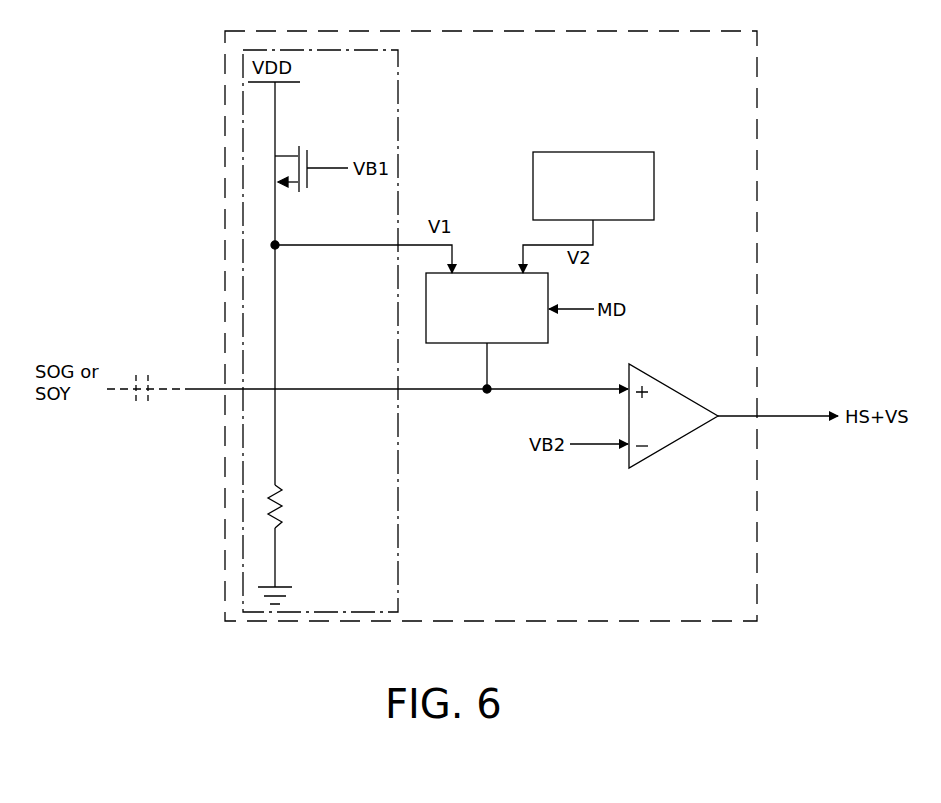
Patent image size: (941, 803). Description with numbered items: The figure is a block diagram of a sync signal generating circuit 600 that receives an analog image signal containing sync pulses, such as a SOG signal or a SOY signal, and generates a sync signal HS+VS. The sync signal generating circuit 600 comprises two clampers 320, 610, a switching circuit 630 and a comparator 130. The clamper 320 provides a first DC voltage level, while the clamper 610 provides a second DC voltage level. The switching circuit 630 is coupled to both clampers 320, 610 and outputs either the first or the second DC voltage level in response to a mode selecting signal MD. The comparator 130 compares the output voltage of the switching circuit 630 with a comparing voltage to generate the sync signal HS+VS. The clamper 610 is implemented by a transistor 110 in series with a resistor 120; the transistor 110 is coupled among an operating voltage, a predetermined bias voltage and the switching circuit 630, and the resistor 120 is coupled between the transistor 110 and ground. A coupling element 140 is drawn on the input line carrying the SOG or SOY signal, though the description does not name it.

The transistor 110 is at (305, 168).
The resistor 120 is at (280, 518).
The comparator 130 is at (683, 400).
The capacitor 140 is at (150, 388).
The clamper 320 is at (606, 152).
The sync signal generating circuit 600 is at (740, 621).
The clamper 610 is at (398, 510).
The switching circuit 630 is at (548, 343).